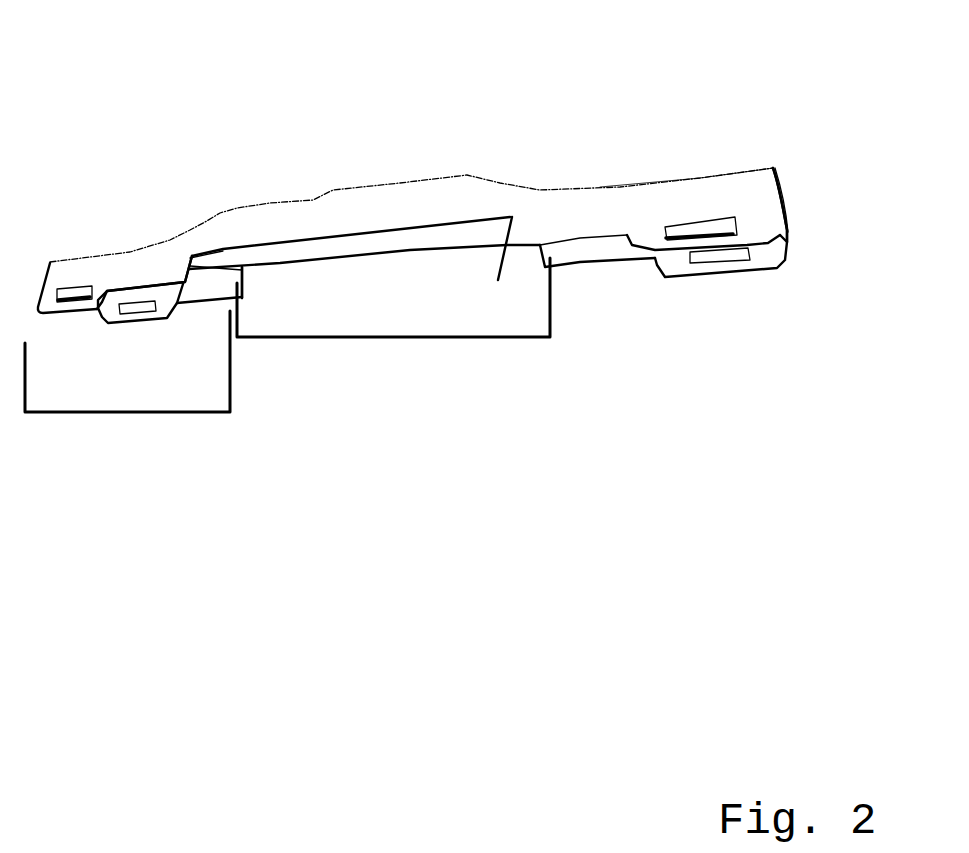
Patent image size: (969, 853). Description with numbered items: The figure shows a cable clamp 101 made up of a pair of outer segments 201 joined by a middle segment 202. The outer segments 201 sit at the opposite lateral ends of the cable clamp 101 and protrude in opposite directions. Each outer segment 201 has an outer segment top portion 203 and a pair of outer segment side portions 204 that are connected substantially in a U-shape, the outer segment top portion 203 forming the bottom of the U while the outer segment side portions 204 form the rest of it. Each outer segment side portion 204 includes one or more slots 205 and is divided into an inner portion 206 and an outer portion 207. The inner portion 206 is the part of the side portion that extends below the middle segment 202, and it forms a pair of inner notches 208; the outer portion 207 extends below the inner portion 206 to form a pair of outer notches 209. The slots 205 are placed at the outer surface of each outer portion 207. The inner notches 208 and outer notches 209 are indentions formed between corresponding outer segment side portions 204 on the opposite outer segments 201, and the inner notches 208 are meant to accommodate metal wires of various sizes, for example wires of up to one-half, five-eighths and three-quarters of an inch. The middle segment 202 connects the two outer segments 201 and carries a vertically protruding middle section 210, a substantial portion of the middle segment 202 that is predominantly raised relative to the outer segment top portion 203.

The cable clamp 101 is at (602, 77).
The outer segments 201 is at (127, 413).
The middle segment 202 is at (395, 337).
The outer segment top portion 203 is at (717, 173).
The outer segment side portions 204 is at (788, 230).
The slots 205 is at (717, 220).
The inner portion 206 is at (190, 298).
The outer portion 207 is at (717, 273).
The inner notches 208 is at (242, 271).
The outer notches 209 is at (103, 302).
The vertically protruding middle section 210 is at (343, 192).